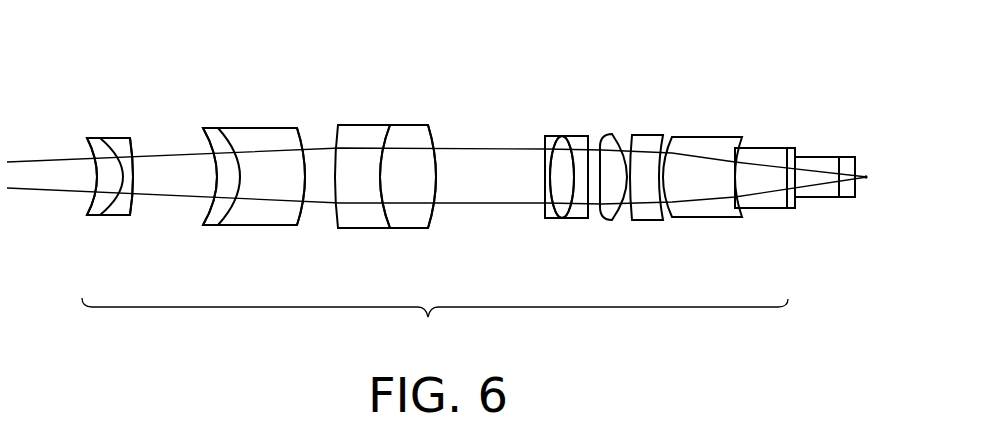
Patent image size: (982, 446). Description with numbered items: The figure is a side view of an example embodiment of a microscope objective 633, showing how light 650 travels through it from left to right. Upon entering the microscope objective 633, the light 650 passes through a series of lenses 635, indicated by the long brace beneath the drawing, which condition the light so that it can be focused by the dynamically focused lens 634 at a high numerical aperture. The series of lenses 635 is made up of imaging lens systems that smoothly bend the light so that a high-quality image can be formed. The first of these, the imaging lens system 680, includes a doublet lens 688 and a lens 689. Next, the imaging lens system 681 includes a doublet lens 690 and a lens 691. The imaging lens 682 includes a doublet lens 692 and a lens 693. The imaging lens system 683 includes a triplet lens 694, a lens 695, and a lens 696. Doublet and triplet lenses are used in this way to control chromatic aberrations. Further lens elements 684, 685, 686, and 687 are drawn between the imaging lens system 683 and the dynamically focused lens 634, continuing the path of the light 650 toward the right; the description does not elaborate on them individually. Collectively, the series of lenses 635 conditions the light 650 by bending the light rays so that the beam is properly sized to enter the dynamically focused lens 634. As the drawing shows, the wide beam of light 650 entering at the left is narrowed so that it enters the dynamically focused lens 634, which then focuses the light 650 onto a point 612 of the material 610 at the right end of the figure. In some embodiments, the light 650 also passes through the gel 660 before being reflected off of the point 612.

The microscope objective 633 is at (66, 71).
The light 650 is at (27, 158).
The imaging lens system 680 is at (109, 138).
The doublet lens 688 is at (87, 216).
The lens 689 is at (113, 216).
The imaging lens system 681 is at (235, 128).
The doublet lens 690 is at (206, 226).
The lens 691 is at (271, 226).
The imaging lens 682 is at (358, 125).
The doublet lens 692 is at (352, 229).
The lens 693 is at (420, 229).
The imaging lens system 683 is at (551, 136).
The triplet lens 694 is at (551, 219).
The lens 695 is at (562, 219).
The lens 696 is at (579, 219).
The fifth lens 684 is at (612, 134).
The sixth lens 685 is at (636, 133).
The seventh lens 686 is at (693, 137).
The eighth lens element 687 is at (750, 147).
The dynamically focused lens 634 is at (802, 157).
The gel 660 is at (848, 157).
The material 610 is at (855, 198).
The point 612 is at (866, 178).
The series of lenses 635 is at (230, 308).